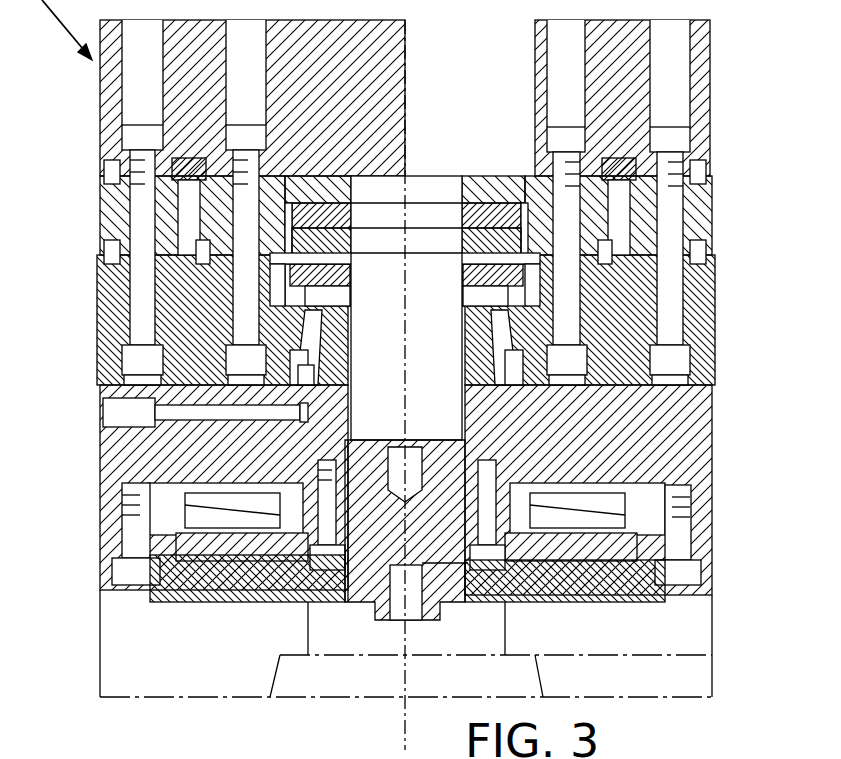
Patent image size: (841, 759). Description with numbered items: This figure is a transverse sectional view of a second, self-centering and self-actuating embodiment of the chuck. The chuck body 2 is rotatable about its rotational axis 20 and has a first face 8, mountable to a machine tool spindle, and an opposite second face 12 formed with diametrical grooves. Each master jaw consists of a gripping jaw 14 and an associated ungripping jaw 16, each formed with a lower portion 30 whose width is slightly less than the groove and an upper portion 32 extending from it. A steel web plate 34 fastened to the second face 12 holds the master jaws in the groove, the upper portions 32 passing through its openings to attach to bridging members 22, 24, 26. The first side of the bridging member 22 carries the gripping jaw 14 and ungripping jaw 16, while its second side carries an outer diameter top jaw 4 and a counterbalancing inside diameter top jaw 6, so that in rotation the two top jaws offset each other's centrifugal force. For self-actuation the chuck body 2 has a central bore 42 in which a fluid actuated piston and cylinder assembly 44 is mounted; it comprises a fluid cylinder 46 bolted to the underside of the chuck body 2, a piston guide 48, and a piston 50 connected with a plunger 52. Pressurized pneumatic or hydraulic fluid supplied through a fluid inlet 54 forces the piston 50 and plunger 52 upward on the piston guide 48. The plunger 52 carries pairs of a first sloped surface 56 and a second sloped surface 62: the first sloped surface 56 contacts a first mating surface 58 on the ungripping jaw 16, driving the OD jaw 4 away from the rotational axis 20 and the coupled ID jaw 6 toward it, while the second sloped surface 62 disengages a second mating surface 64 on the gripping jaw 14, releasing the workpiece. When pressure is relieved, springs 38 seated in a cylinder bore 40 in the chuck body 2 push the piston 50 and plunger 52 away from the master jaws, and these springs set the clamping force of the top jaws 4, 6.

The chuck body 2 is at (712, 430).
The outer diameter top jaw 4 is at (372, 82).
The inside diameter top jaw 6 is at (703, 57).
The first face 8 is at (700, 540).
The second face 12 is at (325, 298).
The gripping jaw 14 is at (714, 327).
The ungripping jaw 16 is at (96, 298).
The rotational axis 20 is at (410, 238).
The bridging member 22 is at (700, 212).
The bridging member 24 is at (466, 190).
The bridging member 26 is at (516, 190).
The lower portion 30 is at (100, 376).
The upper portion 32 is at (100, 268).
The web plate 34 is at (310, 290).
The springs 38 is at (140, 508).
The cylinder bore 40 is at (140, 536).
The central bore 42 is at (350, 420).
The piston and cylinder assembly 44 is at (200, 612).
The fluid cylinder 46 is at (268, 585).
The piston guide 48 is at (362, 600).
The piston 50 is at (560, 575).
The plunger 52 is at (322, 377).
The fluid inlet 54 is at (416, 605).
The first sloped surface 56 is at (320, 352).
The first mating surface 58 is at (320, 330).
The second sloped surface 62 is at (470, 366).
The second mating surface 64 is at (470, 316).